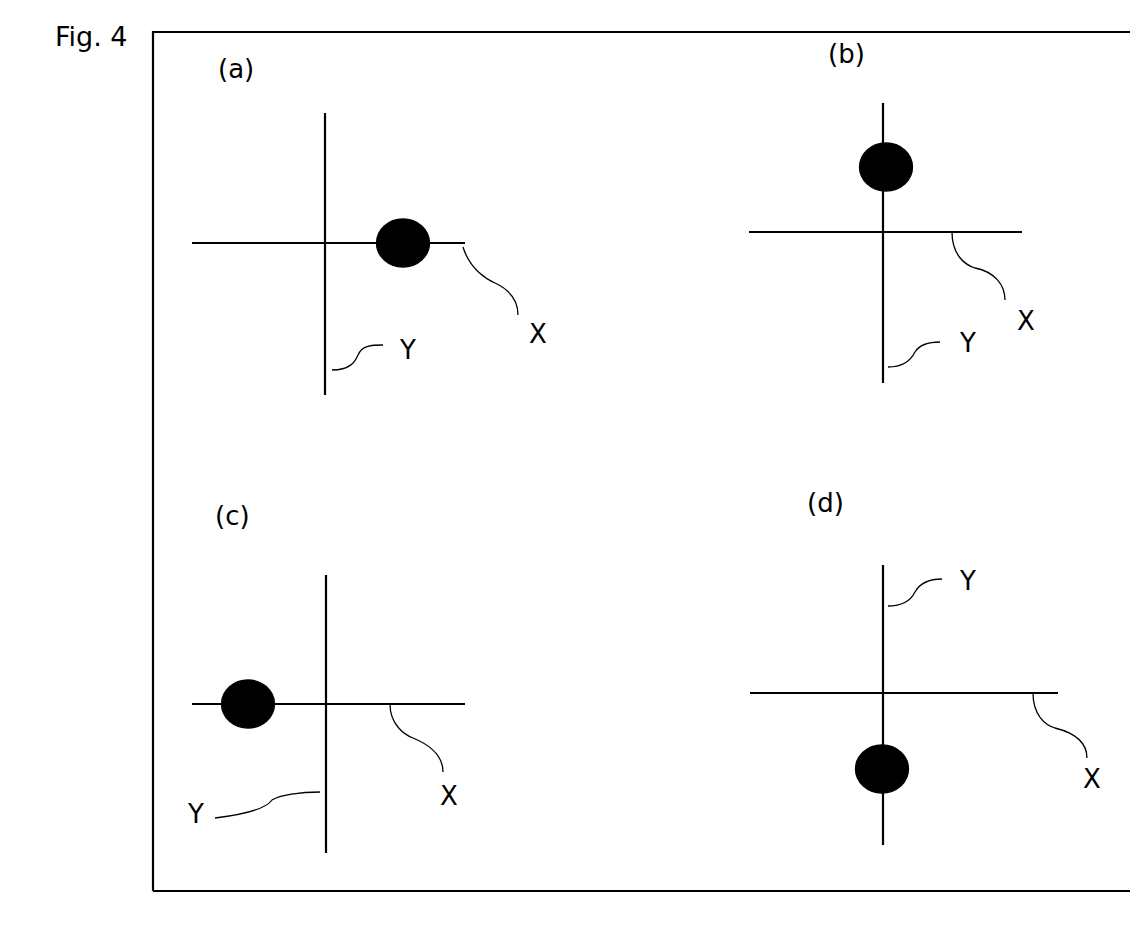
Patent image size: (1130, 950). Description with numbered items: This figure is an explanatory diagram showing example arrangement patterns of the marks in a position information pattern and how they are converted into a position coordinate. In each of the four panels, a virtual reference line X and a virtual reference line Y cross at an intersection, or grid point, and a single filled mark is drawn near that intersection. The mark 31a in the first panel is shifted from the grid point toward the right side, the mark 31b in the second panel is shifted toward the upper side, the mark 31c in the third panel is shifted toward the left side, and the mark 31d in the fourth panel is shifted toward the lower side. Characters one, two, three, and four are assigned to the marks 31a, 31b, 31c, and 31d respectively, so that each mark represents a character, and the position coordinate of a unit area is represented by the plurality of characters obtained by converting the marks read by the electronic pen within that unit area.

The mark 31a is at (430, 228).
The mark 31b is at (858, 167).
The mark 31c is at (275, 698).
The mark 31d is at (907, 775).